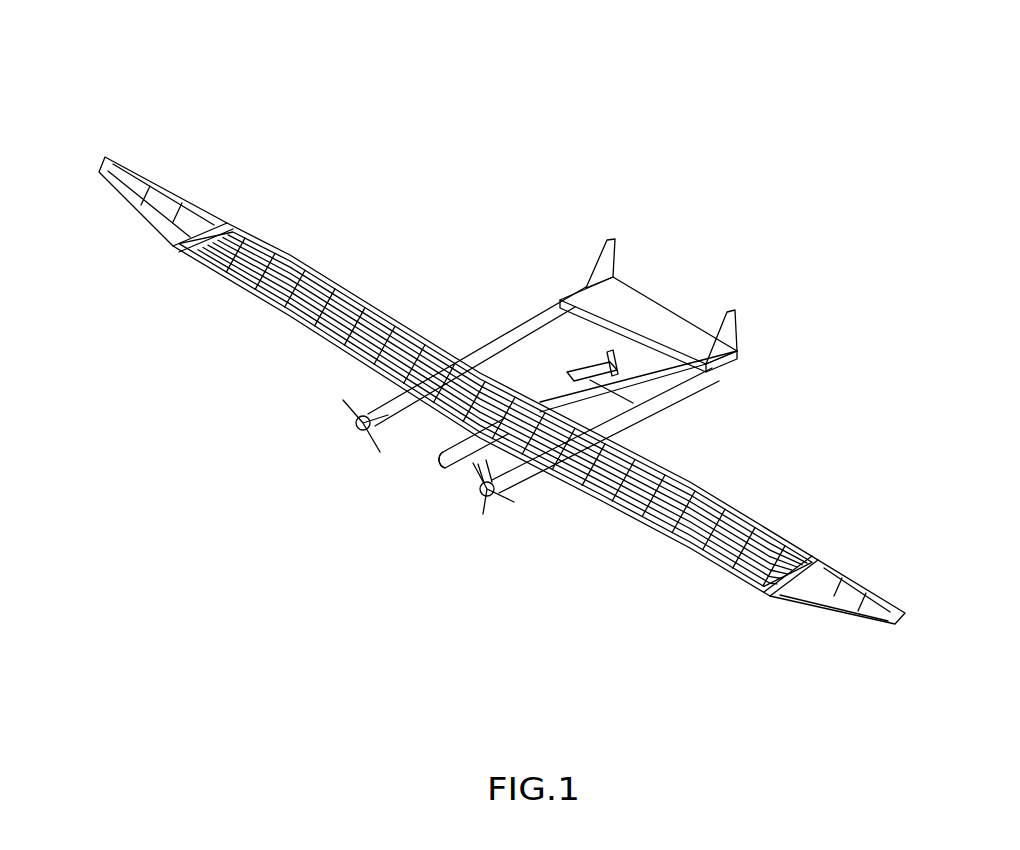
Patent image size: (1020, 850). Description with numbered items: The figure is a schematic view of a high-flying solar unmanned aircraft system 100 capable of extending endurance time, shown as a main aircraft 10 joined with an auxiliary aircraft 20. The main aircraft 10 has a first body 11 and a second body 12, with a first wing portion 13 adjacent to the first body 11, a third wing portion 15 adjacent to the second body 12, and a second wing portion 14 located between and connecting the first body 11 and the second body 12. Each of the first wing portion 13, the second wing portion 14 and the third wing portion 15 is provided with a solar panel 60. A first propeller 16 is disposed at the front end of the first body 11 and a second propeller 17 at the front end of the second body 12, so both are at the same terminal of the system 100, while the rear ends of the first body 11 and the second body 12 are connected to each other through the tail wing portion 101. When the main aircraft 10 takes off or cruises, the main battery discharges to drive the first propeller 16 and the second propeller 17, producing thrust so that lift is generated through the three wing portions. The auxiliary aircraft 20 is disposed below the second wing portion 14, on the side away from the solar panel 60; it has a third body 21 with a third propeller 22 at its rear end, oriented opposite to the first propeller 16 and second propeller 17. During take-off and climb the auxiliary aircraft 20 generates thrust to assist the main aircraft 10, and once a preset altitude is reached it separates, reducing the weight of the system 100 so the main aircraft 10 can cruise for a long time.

The high-flying solar unmanned aircraft system 100 is at (96, 55).
The main aircraft 10 is at (633, 271).
The first body 11 is at (507, 337).
The second body 12 is at (557, 480).
The first wing portion 13 is at (245, 220).
The second wing portion 14 is at (502, 390).
The third wing portion 15 is at (710, 577).
The first propeller 16 is at (360, 413).
The second propeller 17 is at (507, 507).
The auxiliary aircraft 20 is at (437, 463).
The third body 21 is at (405, 516).
The third propeller 22 is at (618, 373).
The solar panel 60 is at (240, 290).
The tail wing portion 101 is at (693, 323).